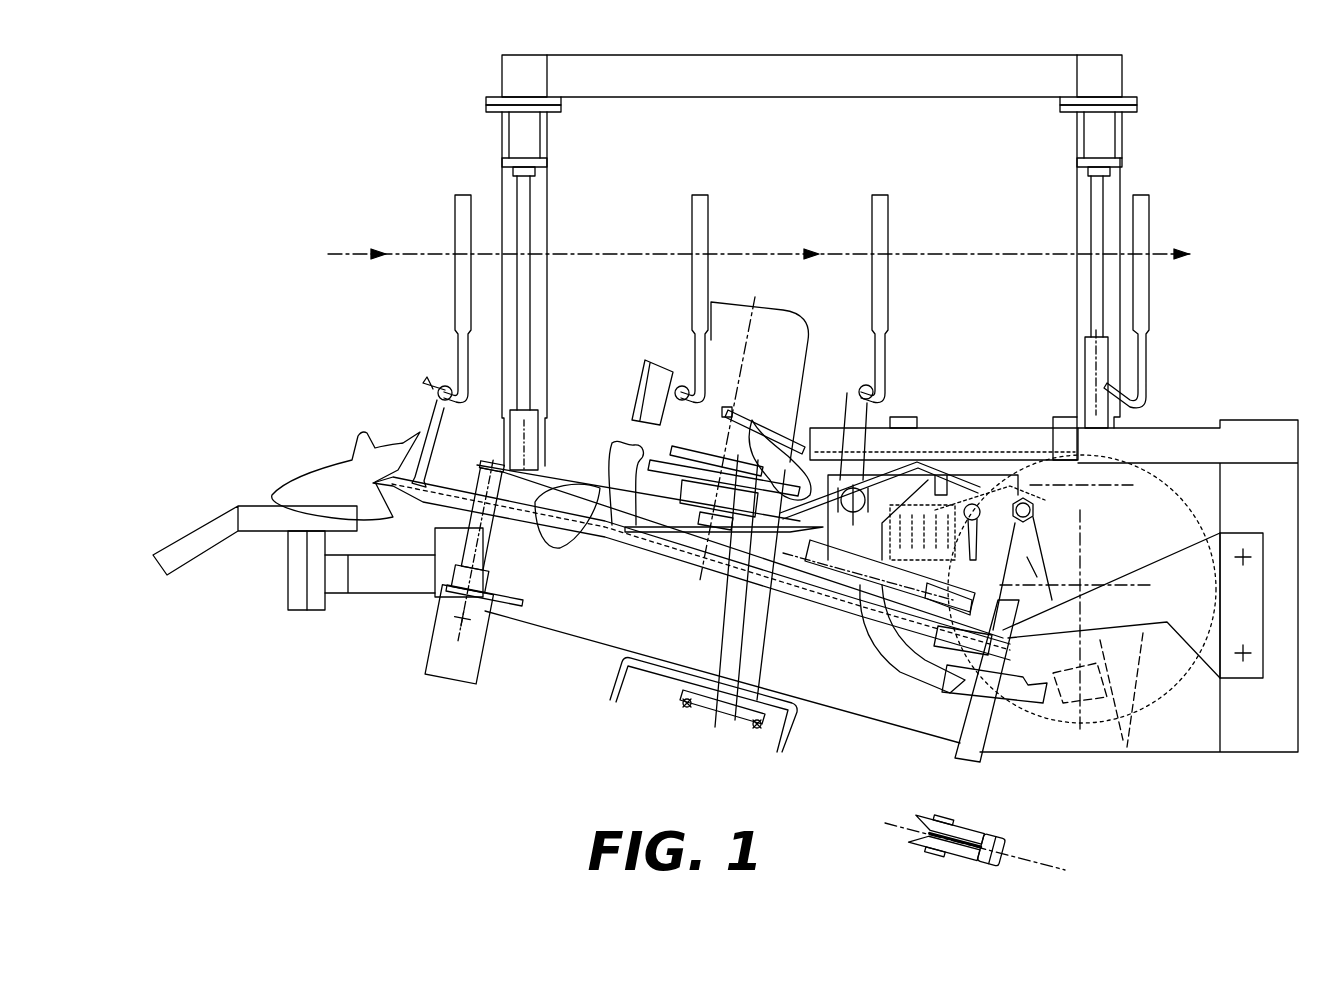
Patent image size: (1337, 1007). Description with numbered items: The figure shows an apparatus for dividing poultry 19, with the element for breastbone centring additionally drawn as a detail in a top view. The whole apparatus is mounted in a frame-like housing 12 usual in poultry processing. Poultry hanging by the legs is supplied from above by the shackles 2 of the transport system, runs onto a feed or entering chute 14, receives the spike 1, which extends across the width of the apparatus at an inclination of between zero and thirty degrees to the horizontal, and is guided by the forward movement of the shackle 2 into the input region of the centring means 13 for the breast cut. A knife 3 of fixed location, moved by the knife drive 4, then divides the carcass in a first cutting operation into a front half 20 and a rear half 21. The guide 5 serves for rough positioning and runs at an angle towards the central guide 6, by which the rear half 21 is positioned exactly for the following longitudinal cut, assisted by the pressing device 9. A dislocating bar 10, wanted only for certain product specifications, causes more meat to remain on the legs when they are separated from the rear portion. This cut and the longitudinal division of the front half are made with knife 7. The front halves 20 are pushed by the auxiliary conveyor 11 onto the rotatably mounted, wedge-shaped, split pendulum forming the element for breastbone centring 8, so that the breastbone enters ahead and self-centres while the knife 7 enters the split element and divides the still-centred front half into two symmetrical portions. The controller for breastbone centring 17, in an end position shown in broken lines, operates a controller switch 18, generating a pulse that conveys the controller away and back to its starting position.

The spike 1 is at (428, 432).
The shackles 2 is at (455, 203).
The knife 3 is at (655, 410).
The knife drive 4 is at (724, 345).
The guide 5 is at (752, 412).
The central guide 6 is at (990, 440).
The knife 7 is at (1153, 690).
The element for breastbone centring 8 is at (972, 660).
The pressing device 9 is at (925, 455).
The dislocating bar 10 is at (905, 455).
The auxiliary conveyor 11 is at (708, 560).
The housing 12 is at (595, 622).
The centring means 13 is at (533, 533).
The entering chute 14 is at (268, 538).
The controller for breastbone centring 17 is at (1018, 480).
The controller switch 18 is at (1065, 535).
The poultry 19 is at (325, 462).
The front half 20 is at (587, 513).
The rear half 21 is at (612, 443).